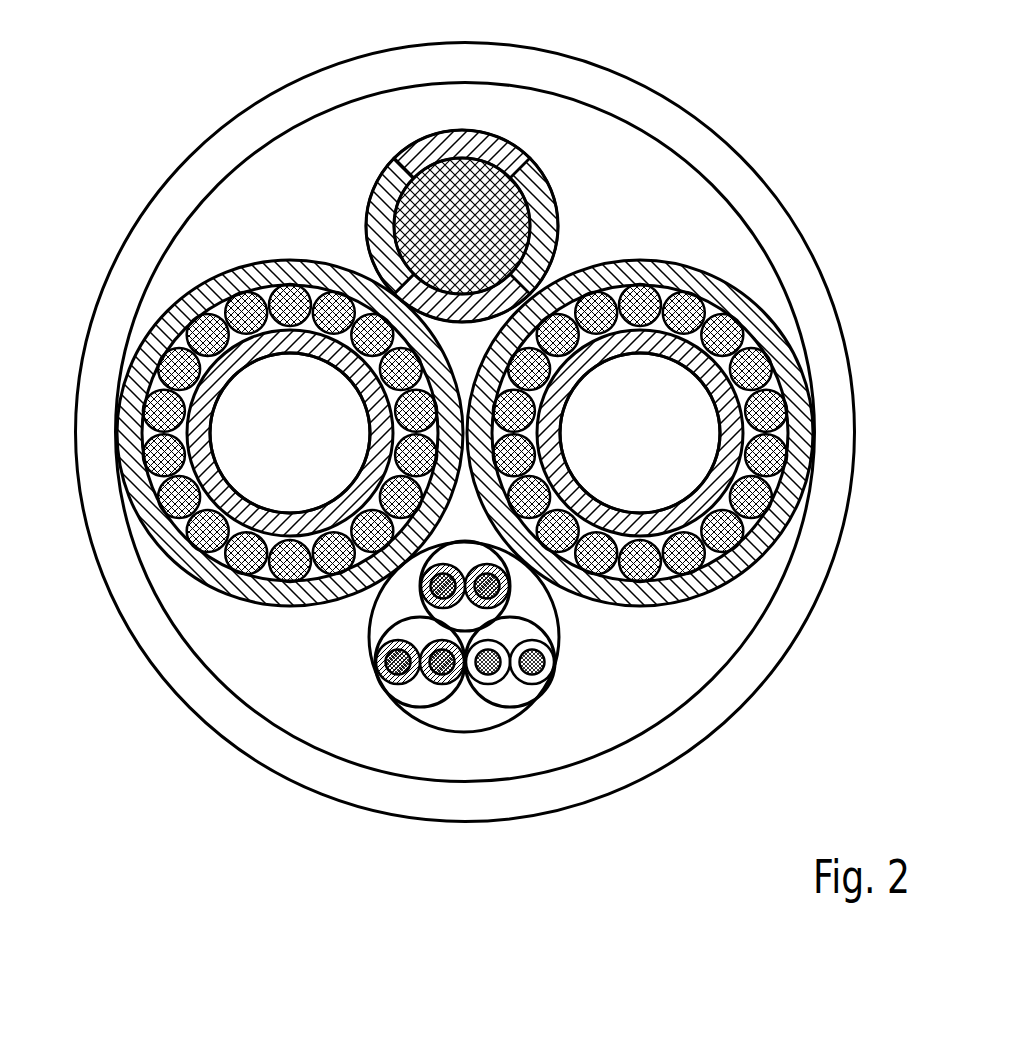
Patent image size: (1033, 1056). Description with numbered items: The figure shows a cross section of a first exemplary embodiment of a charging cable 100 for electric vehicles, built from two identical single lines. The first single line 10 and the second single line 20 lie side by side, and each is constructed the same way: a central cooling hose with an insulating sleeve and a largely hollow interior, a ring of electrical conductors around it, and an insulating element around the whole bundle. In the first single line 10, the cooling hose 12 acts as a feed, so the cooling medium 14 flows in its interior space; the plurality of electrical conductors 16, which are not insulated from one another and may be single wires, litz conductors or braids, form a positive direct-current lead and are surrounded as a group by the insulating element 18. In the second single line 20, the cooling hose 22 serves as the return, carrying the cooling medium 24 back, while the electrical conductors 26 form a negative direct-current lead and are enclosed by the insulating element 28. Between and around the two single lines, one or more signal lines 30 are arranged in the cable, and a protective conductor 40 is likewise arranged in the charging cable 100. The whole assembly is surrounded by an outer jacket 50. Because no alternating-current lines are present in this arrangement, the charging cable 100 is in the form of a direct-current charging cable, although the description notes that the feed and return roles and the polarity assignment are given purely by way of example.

The charging cable 100 is at (741, 73).
The first single line 10 is at (262, 258).
The cooling hose 12 is at (192, 437).
The cooling medium 14 is at (262, 465).
The electrical conductors 16 is at (208, 336).
The insulating element 18 is at (138, 376).
The second single line 20 is at (665, 600).
The cooling hose 22 is at (728, 447).
The cooling medium 24 is at (670, 473).
The electrical conductors 26 is at (752, 367).
The insulating element 28 is at (798, 398).
The signal lines 30 is at (453, 733).
The protective conductor 40 is at (455, 128).
The outer jacket 50 is at (178, 184).